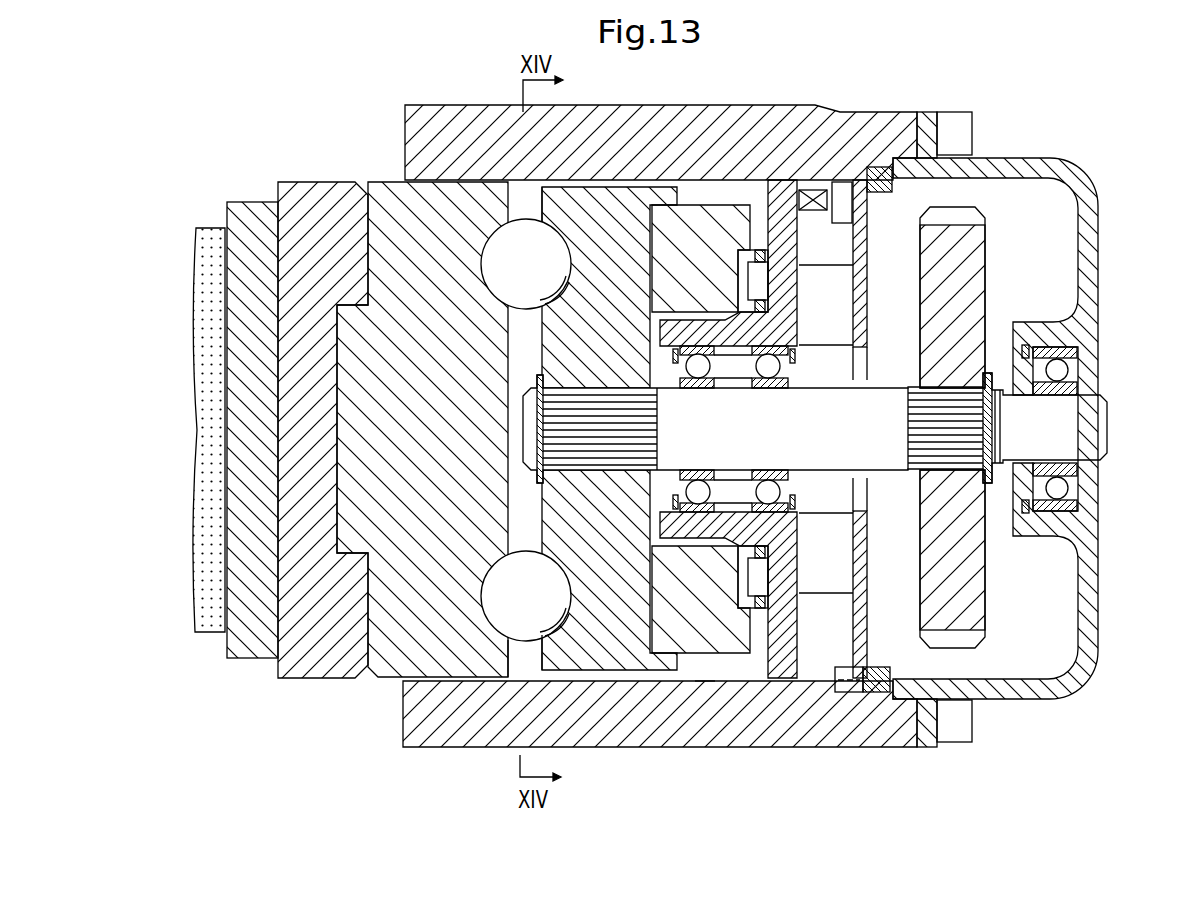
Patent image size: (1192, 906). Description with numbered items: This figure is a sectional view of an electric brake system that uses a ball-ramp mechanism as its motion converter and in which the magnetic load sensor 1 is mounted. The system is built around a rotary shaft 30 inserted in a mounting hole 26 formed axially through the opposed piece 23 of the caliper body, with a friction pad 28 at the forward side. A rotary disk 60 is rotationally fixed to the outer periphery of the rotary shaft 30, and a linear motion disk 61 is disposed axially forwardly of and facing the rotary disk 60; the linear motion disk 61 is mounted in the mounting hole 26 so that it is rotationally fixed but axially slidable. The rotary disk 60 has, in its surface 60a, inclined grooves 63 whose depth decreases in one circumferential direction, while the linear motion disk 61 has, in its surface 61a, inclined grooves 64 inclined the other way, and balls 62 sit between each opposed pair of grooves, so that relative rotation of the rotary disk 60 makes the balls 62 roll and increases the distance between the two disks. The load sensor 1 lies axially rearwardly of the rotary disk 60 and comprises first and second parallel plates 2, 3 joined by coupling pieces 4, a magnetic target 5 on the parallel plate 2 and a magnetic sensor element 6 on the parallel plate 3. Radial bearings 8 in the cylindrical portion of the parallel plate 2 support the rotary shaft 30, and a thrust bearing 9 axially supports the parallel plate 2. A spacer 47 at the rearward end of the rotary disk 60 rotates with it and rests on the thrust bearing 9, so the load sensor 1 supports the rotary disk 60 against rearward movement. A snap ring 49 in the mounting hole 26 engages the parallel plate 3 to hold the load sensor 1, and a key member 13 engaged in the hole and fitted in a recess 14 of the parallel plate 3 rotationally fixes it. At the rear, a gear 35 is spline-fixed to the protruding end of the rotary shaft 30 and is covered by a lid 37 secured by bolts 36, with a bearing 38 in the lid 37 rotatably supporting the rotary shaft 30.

The load sensor 1 is at (1024, 418).
The first parallel plate 2 is at (785, 240).
The second parallel plate 3 is at (860, 200).
The coupling pieces 4 is at (830, 275).
The magnetic target 5 is at (812, 195).
The magnetic sensor element 6 is at (843, 190).
The radial bearings 8 is at (768, 378).
The thrust bearing 9 is at (760, 262).
The key member 13 is at (842, 692).
The recess 14 is at (862, 692).
The opposed piece 23 is at (423, 748).
The mounting hole 26 is at (705, 682).
The friction pad 28 is at (210, 240).
The rotary shaft 30 is at (1107, 430).
The gear 35 is at (985, 570).
The bolts 36 is at (963, 133).
The lid 37 is at (1098, 622).
The bearing 38 is at (1065, 372).
The spacer 47 is at (691, 220).
The snap ring 49 is at (880, 692).
The rotary disk 60 is at (624, 200).
The surface of the rotary disk 60a is at (537, 670).
The linear motion disk 61 is at (428, 165).
The surface of the linear motion disk 61a is at (513, 677).
The balls 62 is at (488, 265).
The inclined grooves 63 is at (537, 247).
The inclined grooves 64 is at (508, 247).